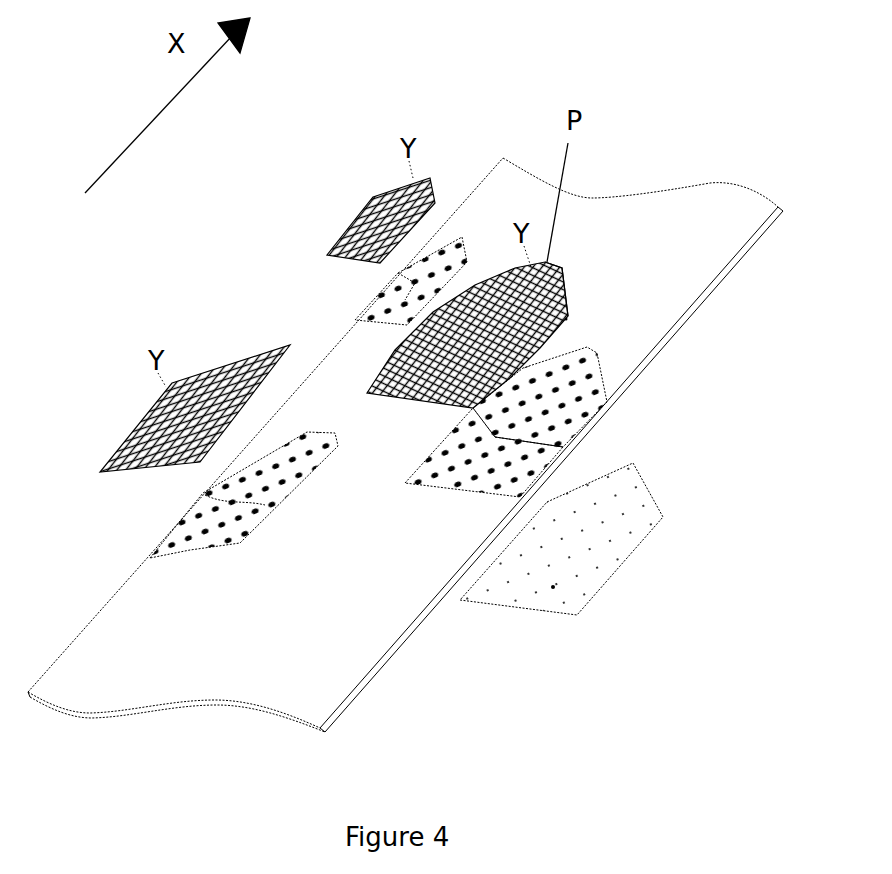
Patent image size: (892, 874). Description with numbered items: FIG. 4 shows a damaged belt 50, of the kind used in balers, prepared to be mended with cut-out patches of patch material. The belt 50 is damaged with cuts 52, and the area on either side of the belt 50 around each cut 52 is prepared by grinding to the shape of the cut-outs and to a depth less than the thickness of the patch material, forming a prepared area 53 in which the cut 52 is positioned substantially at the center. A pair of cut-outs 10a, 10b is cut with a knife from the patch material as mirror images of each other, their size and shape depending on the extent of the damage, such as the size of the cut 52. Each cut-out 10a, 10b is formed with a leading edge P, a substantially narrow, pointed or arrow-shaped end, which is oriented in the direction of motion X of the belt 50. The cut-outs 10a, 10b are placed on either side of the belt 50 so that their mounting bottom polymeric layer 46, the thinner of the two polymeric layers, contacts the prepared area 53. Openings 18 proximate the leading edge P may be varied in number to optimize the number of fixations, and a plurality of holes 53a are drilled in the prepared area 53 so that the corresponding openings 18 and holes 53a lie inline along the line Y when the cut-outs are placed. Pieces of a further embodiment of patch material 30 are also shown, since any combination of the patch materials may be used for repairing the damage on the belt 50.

The cut-out of the patch material 10a is at (565, 290).
The cut-out of the patch material 10b is at (627, 560).
The openings 18 is at (553, 263).
The patch material 30 is at (363, 216).
The mounting bottom polymeric layer 46 is at (570, 323).
The belt 50 is at (667, 297).
The cut 52 is at (398, 280).
The prepared area 53 is at (470, 483).
The holes 53a is at (596, 368).